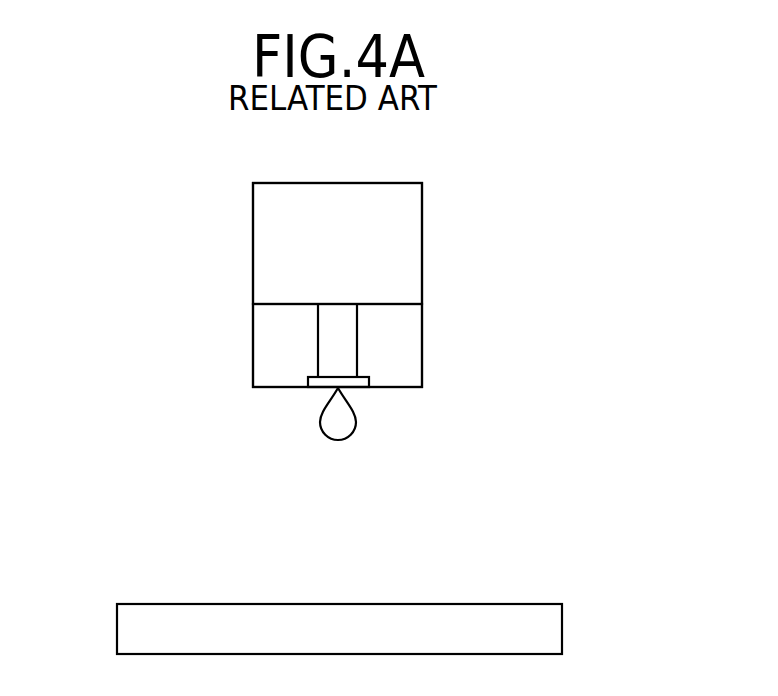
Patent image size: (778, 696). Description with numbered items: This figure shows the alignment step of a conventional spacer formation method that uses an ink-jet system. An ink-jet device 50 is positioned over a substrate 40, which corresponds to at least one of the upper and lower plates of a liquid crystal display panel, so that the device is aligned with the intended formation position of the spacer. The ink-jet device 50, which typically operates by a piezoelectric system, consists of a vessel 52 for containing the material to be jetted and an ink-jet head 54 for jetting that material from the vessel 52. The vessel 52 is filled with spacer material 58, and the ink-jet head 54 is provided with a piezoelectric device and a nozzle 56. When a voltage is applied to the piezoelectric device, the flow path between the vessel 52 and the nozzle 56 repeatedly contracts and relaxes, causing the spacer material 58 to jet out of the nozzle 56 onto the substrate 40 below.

The ink-jet device 50 is at (240, 268).
The vessel 52 is at (412, 244).
The ink-jet head 54 is at (412, 344).
The nozzle 56 is at (323, 363).
The spacer material 58 is at (348, 416).
The substrate 40 is at (555, 630).